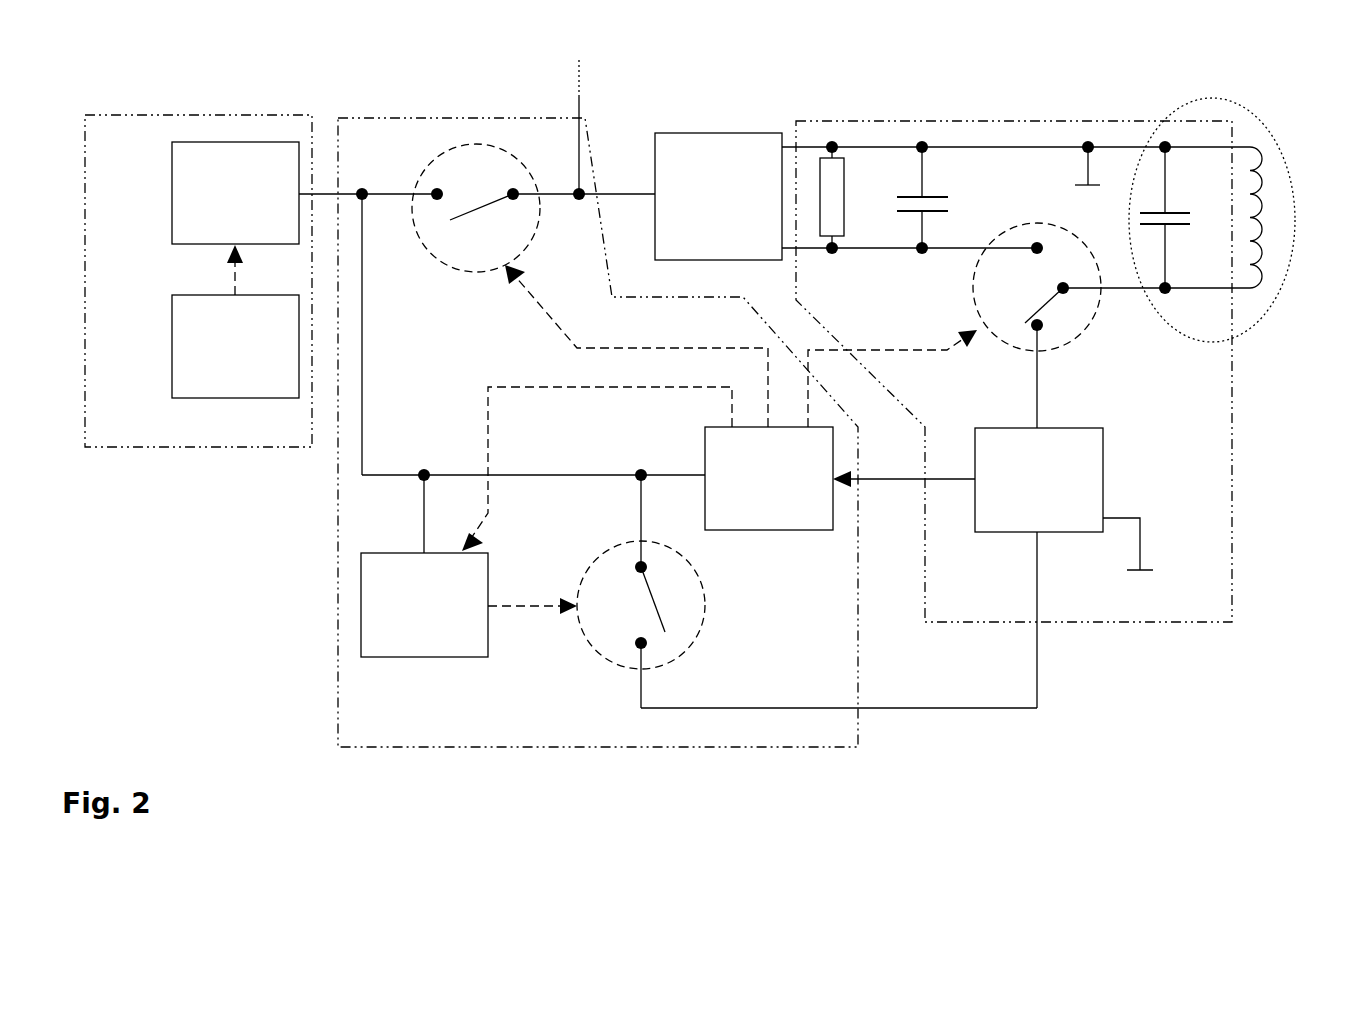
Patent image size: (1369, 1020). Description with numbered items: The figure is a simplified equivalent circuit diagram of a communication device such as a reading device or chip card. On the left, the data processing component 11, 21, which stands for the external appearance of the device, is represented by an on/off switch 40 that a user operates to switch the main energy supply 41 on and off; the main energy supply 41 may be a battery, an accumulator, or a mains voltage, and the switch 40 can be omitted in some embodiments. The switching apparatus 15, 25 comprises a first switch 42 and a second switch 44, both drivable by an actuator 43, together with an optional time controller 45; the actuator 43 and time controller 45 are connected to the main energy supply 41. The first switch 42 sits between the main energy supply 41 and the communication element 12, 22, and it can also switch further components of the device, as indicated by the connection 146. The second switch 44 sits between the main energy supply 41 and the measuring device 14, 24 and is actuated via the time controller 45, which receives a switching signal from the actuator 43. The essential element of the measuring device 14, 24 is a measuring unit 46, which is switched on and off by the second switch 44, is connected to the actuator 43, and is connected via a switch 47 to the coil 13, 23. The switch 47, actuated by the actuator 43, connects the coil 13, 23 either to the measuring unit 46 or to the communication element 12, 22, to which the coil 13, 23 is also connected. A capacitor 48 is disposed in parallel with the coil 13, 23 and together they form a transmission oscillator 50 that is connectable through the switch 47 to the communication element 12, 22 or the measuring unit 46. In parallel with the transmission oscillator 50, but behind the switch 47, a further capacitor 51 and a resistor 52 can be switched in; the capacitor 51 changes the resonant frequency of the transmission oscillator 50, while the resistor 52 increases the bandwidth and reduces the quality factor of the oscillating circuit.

The data processing component 11 is at (198, 312).
The data processing component 21 is at (237, 447).
The communication element 12 is at (718, 183).
The communication element 22 is at (718, 183).
The coil 13 is at (1308, 217).
The coil 23 is at (1270, 252).
The measuring device 14 is at (1014, 396).
The measuring device 24 is at (1075, 622).
The switching apparatus 15 is at (598, 464).
The switching apparatus 25 is at (502, 747).
The on/off switch 40 is at (172, 308).
The main energy supply 41 is at (172, 155).
The first switch 42 is at (492, 143).
The actuator 43 is at (743, 530).
The second switch 44 is at (617, 670).
The time controller 45 is at (465, 657).
The measuring unit 46 is at (1103, 487).
The switch 47 is at (1063, 345).
The capacitor 48 is at (1203, 212).
The transmission oscillator 50 is at (1245, 327).
The capacitor 51 is at (952, 197).
The resistor 52 is at (835, 197).
The connection 146 is at (609, 116).